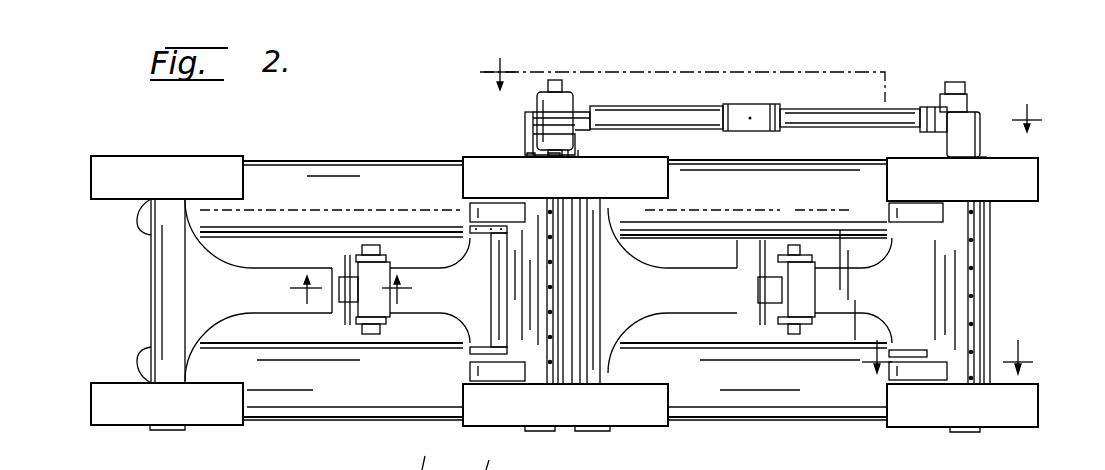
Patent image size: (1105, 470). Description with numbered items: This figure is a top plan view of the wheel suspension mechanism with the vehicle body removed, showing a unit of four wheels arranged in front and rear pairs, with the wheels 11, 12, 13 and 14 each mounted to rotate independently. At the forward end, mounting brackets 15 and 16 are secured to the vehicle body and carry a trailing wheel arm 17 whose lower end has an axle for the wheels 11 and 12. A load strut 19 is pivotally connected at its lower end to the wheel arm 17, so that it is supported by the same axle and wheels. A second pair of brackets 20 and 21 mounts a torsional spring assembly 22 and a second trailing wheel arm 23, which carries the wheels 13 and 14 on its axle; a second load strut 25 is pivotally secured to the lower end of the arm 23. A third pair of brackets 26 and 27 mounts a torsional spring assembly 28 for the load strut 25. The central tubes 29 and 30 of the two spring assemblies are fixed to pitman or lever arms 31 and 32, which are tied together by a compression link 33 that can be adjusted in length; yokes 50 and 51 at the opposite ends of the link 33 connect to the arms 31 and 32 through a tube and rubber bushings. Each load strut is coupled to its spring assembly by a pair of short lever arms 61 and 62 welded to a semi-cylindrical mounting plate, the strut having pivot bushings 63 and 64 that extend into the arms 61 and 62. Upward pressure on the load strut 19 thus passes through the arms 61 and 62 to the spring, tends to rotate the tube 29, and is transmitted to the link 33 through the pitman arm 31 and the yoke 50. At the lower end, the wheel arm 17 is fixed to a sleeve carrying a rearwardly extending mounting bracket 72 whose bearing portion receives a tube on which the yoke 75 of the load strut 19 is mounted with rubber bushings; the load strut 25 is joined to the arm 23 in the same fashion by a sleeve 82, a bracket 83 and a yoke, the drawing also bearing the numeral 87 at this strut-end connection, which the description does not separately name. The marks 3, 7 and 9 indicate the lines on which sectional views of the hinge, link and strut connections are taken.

The section line 3- 3 is at (351, 297).
The section line 7- 7 is at (763, 86).
The section line 9- 9 is at (947, 347).
The wheel 11 is at (283, 397).
The wheel 12 is at (258, 170).
The wheel 13 is at (781, 396).
The wheel 14 is at (779, 168).
The mounting bracket 15 is at (136, 415).
The mounting bracket 16 is at (115, 168).
The trailing wheel arm 17 is at (181, 278).
The load strut 19 is at (433, 274).
The bracket 20 is at (480, 163).
The bracket 21 is at (656, 398).
The torsional spring assembly 22 is at (540, 368).
The second trailing wheel arm 23 is at (716, 302).
The second load strut 25 is at (862, 302).
The bracket 26 is at (1019, 412).
The bracket 27 is at (1035, 184).
The torsional spring assembly 28 is at (957, 278).
The central tube 29 is at (530, 152).
The central tube 30 is at (985, 158).
The lever arm (pitman arm) 31 is at (529, 116).
The lever arm (pitman arm) 32 is at (973, 126).
The compression link 33 is at (790, 108).
The yoke 50 is at (576, 107).
The yoke 51 is at (934, 135).
The short lever arm 61 is at (470, 370).
The short lever arm 62 is at (473, 210).
The pivot bushing 63 is at (472, 228).
The pivot bushing 64 is at (470, 348).
The mounting bracket 72 is at (347, 295).
The yoke 75 is at (388, 320).
The sleeve 82 is at (740, 258).
The bracket 83 is at (773, 293).
The hinge clevis 87 is at (806, 266).